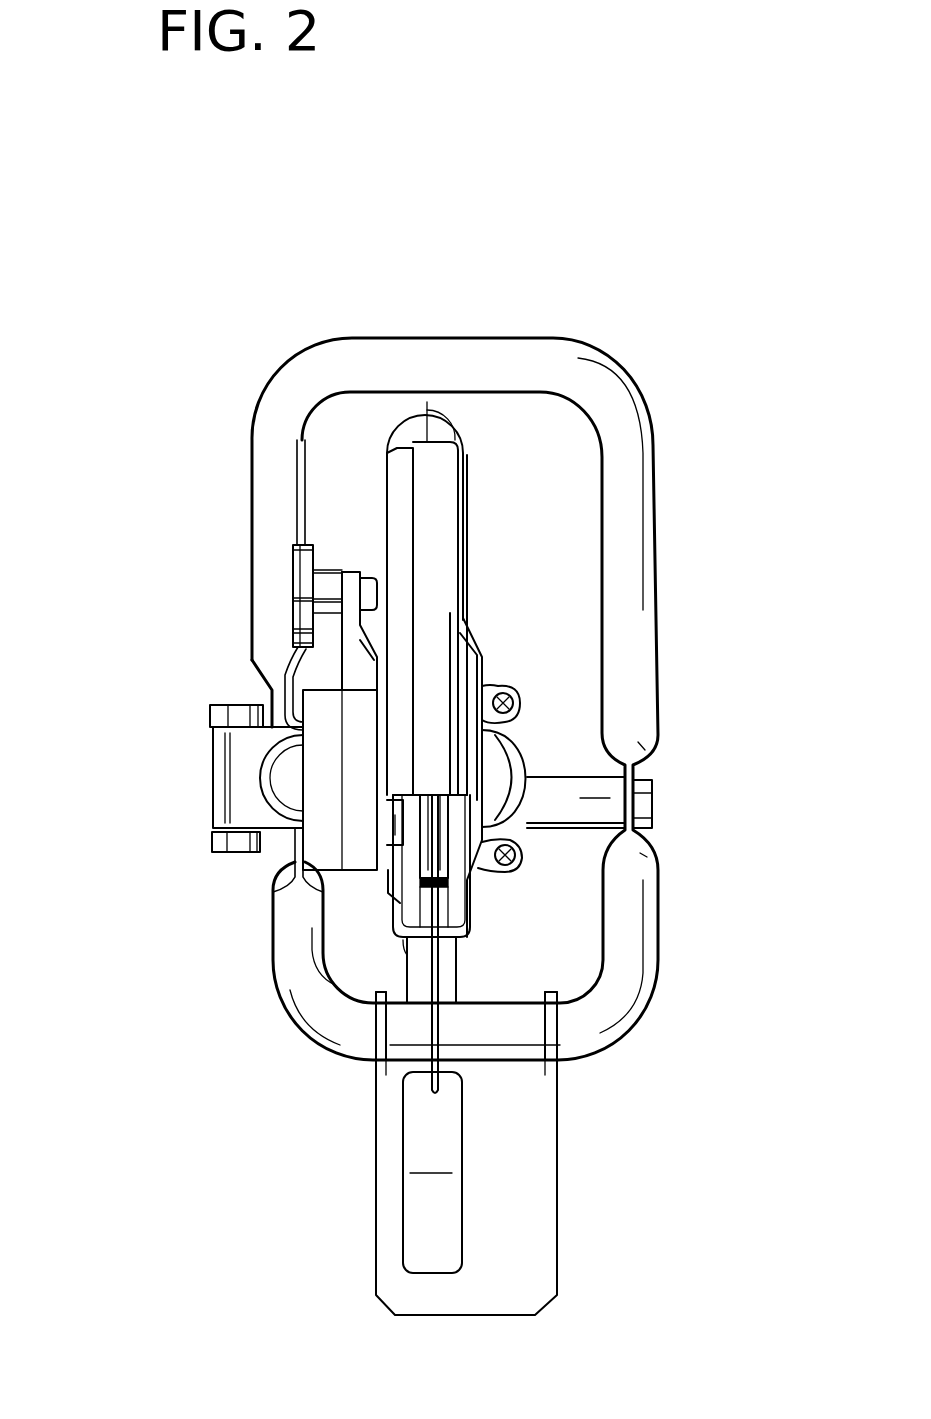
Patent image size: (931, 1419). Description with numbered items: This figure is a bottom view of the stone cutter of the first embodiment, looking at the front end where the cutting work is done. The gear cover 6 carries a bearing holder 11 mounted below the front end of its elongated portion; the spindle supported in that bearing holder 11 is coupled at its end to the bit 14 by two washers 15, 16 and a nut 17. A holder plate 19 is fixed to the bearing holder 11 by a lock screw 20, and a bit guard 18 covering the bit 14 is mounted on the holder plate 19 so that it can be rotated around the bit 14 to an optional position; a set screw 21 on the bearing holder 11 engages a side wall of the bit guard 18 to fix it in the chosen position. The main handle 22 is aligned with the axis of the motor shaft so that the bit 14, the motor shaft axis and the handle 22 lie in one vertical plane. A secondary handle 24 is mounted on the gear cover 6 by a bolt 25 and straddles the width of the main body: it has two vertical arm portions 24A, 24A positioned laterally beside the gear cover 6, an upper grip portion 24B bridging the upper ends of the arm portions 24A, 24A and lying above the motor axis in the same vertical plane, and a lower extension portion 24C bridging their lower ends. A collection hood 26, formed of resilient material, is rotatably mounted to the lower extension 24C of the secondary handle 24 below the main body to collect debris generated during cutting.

The gear cover 6 is at (213, 772).
The bearing holder 11 is at (355, 702).
The bit 14 is at (425, 1042).
The washer 15 is at (413, 885).
The washer 16 is at (448, 892).
The nut 17 is at (627, 833).
The bit guard 18 is at (380, 467).
The holder plate 19 is at (395, 896).
The lock screw 20 is at (393, 813).
The set screw 21 is at (298, 566).
The handle 22 is at (402, 420).
The secondary handle 24 is at (297, 357).
The vertical arm portion 24A is at (263, 465).
The upper grip portion 24B is at (510, 348).
The lower extension portion 24C is at (598, 1032).
The bolt 25 is at (235, 703).
The collection hood 26 is at (376, 1222).